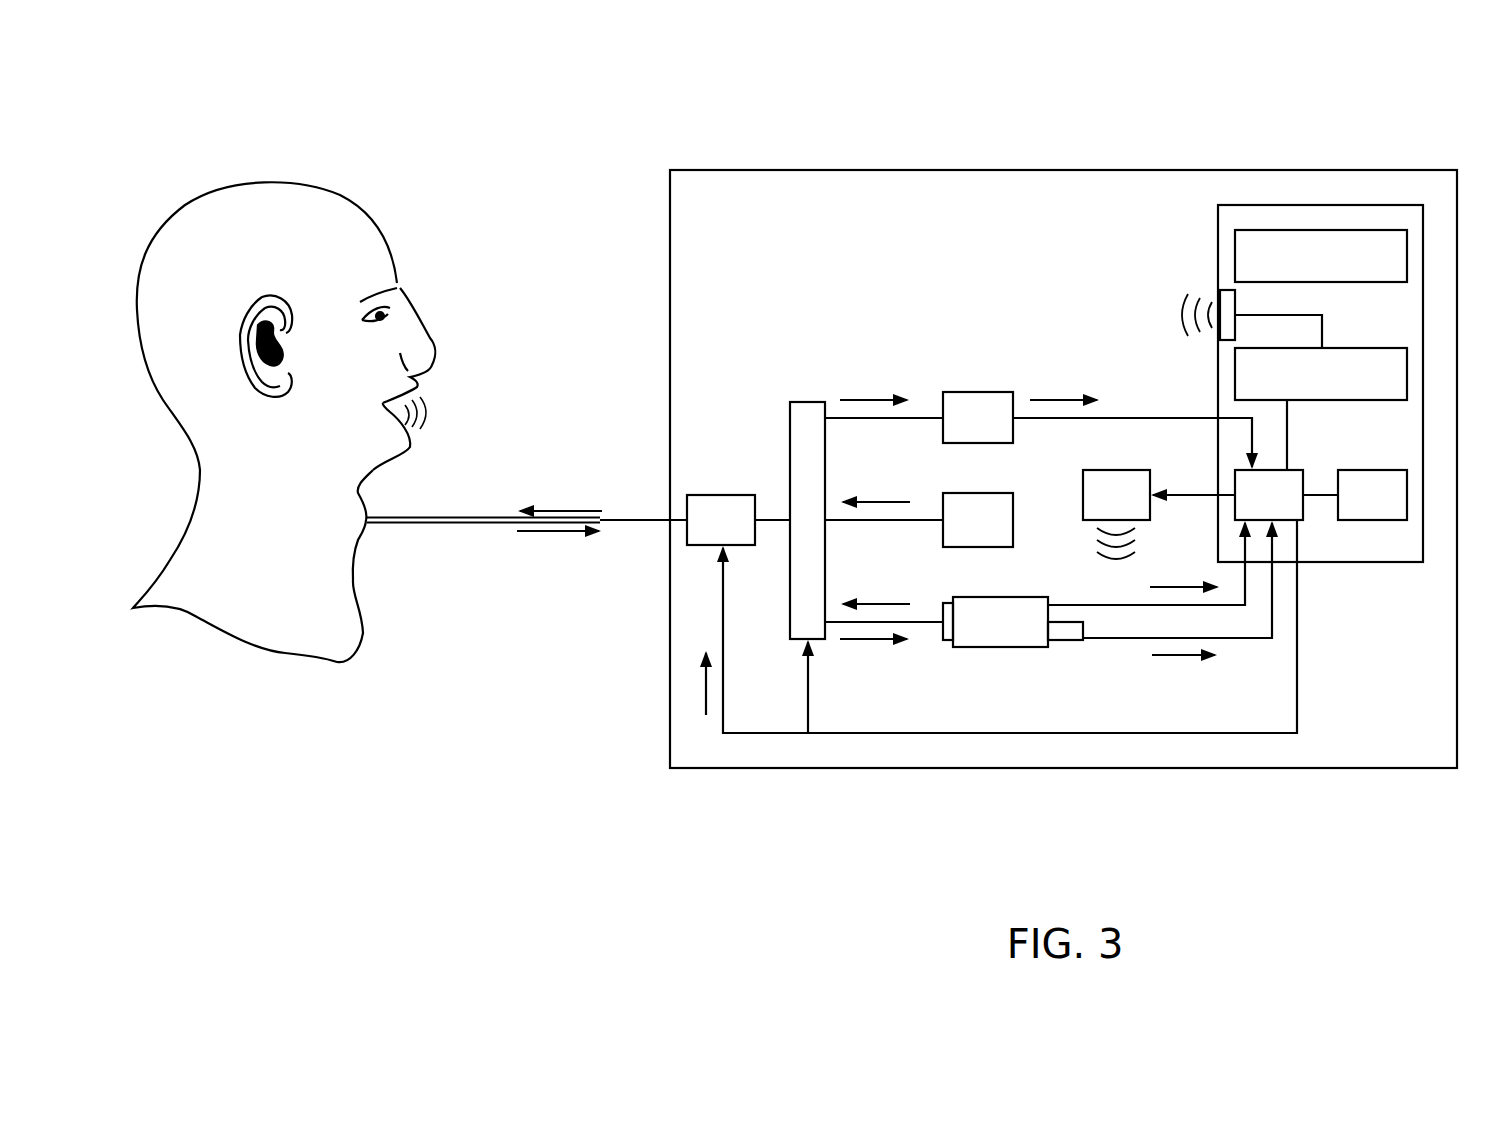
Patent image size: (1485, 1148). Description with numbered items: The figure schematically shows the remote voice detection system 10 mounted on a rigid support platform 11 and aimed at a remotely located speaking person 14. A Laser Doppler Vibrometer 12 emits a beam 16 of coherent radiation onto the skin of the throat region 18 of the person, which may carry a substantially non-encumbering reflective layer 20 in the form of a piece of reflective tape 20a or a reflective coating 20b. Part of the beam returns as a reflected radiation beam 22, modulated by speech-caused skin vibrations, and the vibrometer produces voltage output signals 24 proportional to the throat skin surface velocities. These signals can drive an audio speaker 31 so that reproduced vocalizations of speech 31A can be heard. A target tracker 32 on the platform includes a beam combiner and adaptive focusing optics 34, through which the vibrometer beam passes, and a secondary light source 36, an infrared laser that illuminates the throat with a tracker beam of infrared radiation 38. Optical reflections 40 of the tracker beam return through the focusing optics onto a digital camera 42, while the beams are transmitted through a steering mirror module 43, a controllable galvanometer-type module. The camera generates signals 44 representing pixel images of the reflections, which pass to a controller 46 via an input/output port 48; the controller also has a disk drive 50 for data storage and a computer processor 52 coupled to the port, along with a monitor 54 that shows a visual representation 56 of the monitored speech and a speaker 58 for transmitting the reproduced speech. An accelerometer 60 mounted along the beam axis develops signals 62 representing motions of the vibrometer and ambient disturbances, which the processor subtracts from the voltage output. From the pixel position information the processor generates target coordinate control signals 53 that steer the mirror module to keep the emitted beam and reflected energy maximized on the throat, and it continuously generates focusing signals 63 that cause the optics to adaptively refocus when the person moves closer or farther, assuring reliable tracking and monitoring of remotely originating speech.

The remote voice detection system 10 is at (515, 210).
The support platform 11 is at (1063, 170).
The Laser Doppler Vibrometer 12 is at (1035, 585).
The speaking person 14 is at (343, 200).
The beam 16 is at (565, 510).
The throat region 18 is at (372, 545).
The reflective layer 20 is at (509, 417).
The reflective tape 20a is at (365, 495).
The reflective coating 20b is at (391, 436).
The reflected radiation beam 22 is at (553, 536).
The voltage output signals 24 is at (1178, 587).
The audio speaker 31 is at (1159, 495).
The reproduced vocalizations of speech 31A is at (1162, 302).
The target tracker 32 is at (935, 297).
The beam combiner and adaptive focusing optics 34 is at (805, 402).
The secondary light source 36 is at (919, 520).
The tracker beam of infrared radiation 38 is at (882, 502).
The optical reflections 40 is at (866, 400).
The digital camera 42 is at (919, 417).
The steering mirror module 43 is at (721, 520).
The signals 44 is at (1055, 400).
The controller 46 is at (1218, 220).
The input/output port 48 is at (1269, 495).
The disk drive 50 is at (1355, 495).
The computer processor 52 is at (1321, 409).
The target coordinate control signals 53 is at (706, 690).
The monitor 54 is at (1325, 230).
The visual representation 56 is at (1321, 256).
The speaker 58 is at (1238, 300).
The accelerometer 60 is at (1065, 640).
The signals 62 is at (1177, 657).
The focusing signals 63 is at (808, 683).